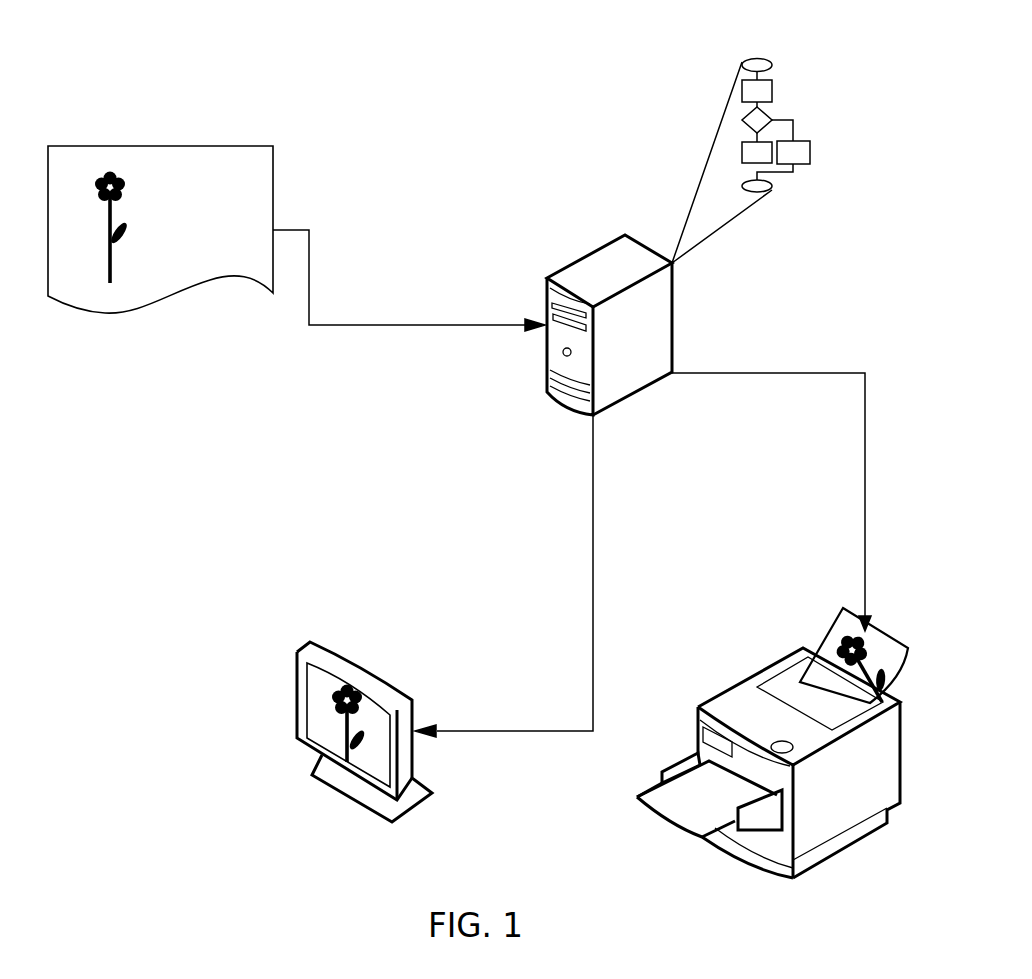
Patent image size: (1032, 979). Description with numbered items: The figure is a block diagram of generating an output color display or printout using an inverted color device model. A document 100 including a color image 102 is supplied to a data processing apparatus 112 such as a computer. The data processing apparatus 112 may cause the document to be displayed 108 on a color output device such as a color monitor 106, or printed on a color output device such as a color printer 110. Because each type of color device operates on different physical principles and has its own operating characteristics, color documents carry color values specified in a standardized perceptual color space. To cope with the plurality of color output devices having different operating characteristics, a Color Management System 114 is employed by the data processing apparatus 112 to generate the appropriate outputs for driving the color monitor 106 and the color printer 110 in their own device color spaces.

The document 100 is at (163, 146).
The color image 102 is at (127, 188).
The color monitor 106 is at (392, 680).
The displayed image 108 is at (333, 703).
The color printer 110 is at (698, 707).
The data processing apparatus 112 is at (547, 278).
The Color Management System 114 is at (742, 60).